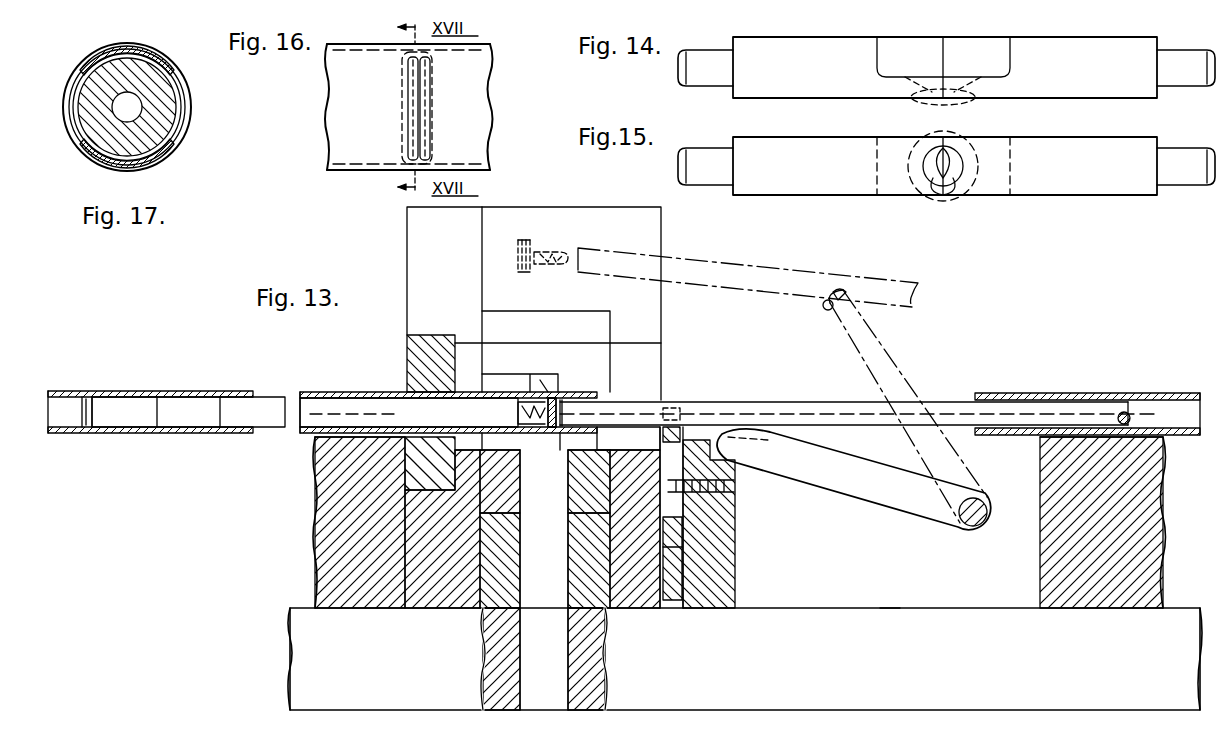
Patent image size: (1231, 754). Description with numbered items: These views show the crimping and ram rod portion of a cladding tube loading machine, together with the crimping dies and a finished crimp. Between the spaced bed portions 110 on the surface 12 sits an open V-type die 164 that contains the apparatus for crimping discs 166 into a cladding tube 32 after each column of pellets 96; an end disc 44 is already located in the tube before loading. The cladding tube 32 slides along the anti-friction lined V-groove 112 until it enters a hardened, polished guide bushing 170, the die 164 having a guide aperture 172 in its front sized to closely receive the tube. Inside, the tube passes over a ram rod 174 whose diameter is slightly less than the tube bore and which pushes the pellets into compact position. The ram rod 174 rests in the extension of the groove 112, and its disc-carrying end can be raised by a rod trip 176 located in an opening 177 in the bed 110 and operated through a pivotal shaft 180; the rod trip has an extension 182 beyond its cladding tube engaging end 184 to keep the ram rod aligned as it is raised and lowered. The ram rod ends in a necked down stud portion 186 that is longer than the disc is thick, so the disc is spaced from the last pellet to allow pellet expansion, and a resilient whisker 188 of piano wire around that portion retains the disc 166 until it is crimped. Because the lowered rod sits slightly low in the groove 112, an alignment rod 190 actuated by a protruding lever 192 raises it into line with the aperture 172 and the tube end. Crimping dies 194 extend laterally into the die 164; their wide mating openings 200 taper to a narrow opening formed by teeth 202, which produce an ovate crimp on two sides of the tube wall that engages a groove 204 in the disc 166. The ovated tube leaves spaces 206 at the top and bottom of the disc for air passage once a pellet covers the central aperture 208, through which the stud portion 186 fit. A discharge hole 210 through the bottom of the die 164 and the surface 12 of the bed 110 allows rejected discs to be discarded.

In FIG. 13, the surface 12 is at (438, 708).
In FIG. 17, the cladding tube 32 is at (190, 100).
In FIG. 16, the cladding tube 32 is at (337, 172).
In FIG. 13, the cladding tube 32 is at (206, 391).
In FIG. 13, the end disc 44 is at (92, 410).
In FIG. 13, the pellets 96 is at (272, 404).
In FIG. 13, the bed portions 110 is at (318, 524).
In FIG. 13, the V-groove 112 is at (314, 438).
In FIG. 13, the die 164 is at (700, 239).
In FIG. 17, the disc 166 is at (97, 80).
In FIG. 13, the disc 166 is at (526, 250).
In FIG. 13, the guide bushing 170 is at (408, 346).
In FIG. 13, the guide aperture 172 is at (412, 392).
In FIG. 13, the ram rod 174 is at (795, 276).
In FIG. 13, the rod trip 176 is at (836, 490).
In FIG. 13, the opening 177 is at (893, 600).
In FIG. 13, the pivotal shaft 180 is at (973, 526).
In FIG. 13, the extension 182 is at (840, 286).
In FIG. 13, the cladding tube engaging end 184 is at (822, 312).
In FIG. 13, the necked down stud portion 186 is at (556, 270).
In FIG. 13, the resilient whisker 188 is at (562, 258).
In FIG. 13, the alignment rod 190 is at (662, 436).
In FIG. 13, the lever 192 is at (674, 602).
In FIG. 14, the crimping dies 194 is at (836, 48).
In FIG. 15, the crimping dies 194 is at (816, 146).
In FIG. 14, the mating openings 200 is at (880, 62).
In FIG. 15, the mating openings 200 is at (874, 175).
In FIG. 14, the teeth 202 is at (918, 100).
In FIG. 15, the teeth 202 is at (943, 195).
In FIG. 17, the groove 204 is at (183, 128).
In FIG. 16, the groove 204 is at (426, 116).
In FIG. 13, the groove 204 is at (564, 413).
In FIG. 17, the spaces 206 is at (137, 50).
In FIG. 16, the spaces 206 is at (430, 60).
In FIG. 17, the central aperture 208 is at (118, 112).
In FIG. 13, the discharge hole 210 is at (548, 700).